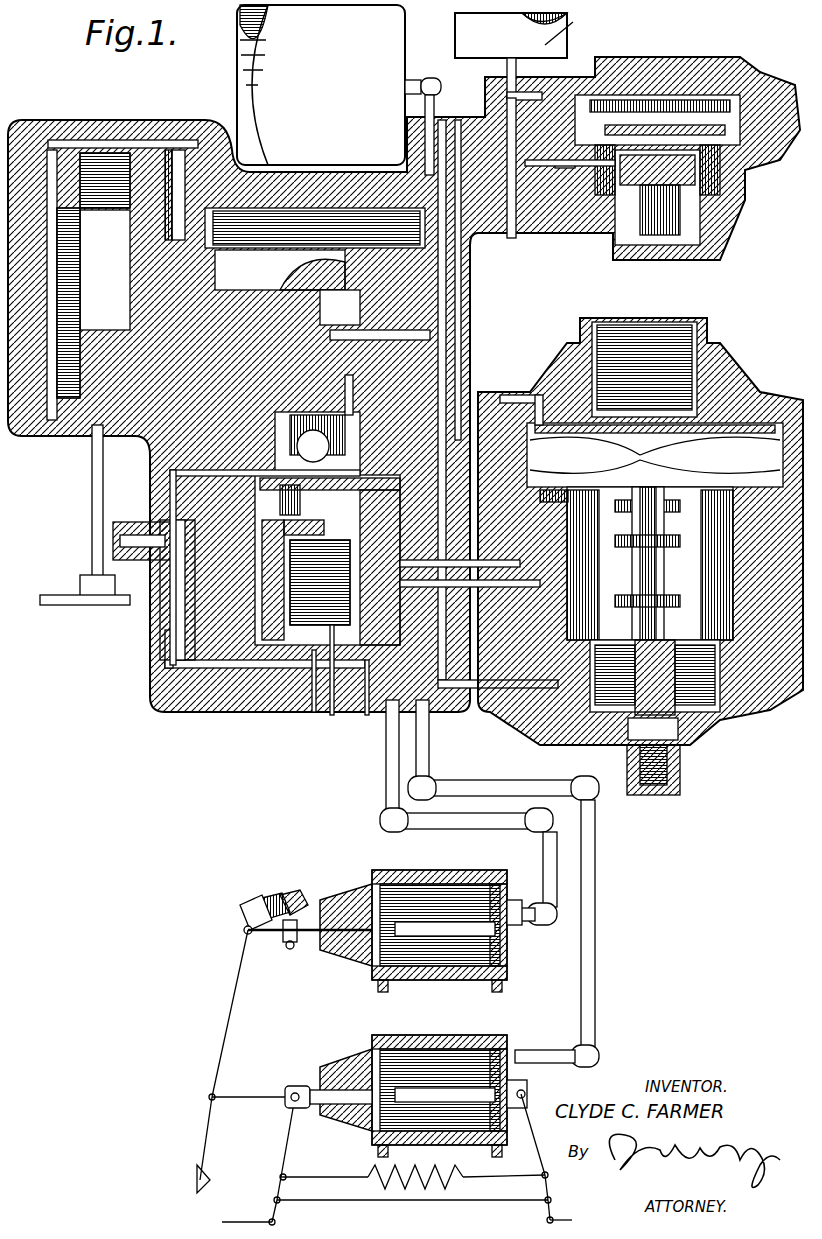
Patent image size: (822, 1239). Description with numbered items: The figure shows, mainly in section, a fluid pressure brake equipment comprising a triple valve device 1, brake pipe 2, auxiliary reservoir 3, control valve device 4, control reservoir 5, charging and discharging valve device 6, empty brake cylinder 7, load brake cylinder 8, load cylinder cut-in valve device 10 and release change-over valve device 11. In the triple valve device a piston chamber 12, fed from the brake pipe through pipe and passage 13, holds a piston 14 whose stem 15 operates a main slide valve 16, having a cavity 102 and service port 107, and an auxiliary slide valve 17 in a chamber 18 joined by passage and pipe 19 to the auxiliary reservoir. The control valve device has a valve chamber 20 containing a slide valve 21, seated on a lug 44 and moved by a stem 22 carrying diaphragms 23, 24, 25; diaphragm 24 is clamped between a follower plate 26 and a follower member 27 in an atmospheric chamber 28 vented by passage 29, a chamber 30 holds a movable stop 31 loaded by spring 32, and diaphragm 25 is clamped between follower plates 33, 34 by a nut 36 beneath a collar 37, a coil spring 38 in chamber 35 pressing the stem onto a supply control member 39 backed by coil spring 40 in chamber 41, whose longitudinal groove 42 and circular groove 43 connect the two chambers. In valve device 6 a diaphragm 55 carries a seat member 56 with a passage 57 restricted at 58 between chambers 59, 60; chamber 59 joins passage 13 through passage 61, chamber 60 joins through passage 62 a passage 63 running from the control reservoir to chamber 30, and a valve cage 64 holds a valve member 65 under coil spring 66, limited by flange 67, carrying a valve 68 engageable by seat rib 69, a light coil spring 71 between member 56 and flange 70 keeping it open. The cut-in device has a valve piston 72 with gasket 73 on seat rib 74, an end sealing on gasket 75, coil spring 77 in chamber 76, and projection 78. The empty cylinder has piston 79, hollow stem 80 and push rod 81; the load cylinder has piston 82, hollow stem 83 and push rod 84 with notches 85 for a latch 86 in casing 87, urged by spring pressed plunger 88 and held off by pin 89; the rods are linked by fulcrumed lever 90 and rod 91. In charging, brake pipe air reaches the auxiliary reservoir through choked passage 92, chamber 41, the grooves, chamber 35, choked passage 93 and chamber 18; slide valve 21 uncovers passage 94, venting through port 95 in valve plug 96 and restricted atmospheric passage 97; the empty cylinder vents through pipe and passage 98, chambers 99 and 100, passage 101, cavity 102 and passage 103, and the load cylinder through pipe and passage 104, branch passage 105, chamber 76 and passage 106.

The triple valve device 1 is at (205, 120).
The brake pipe 2 is at (52, 596).
The auxiliary reservoir 3 is at (329, 85).
The control valve device 4 is at (560, 395).
The control reservoir 5 is at (619, 51).
The control reservoir charging and discharging valve device 6 is at (672, 57).
The empty brake cylinder 7 is at (355, 1065).
The load brake cylinder 8 is at (358, 897).
The load cylinder cut-in valve device 10 is at (250, 630).
The release change-over valve device 11 is at (140, 522).
The piston chamber 12 is at (104, 190).
The pipe and passage 13 is at (45, 287).
The piston 14 is at (132, 228).
The stem 15 is at (268, 263).
The main slide valve 16 is at (228, 305).
The auxiliary slide valve 17 is at (330, 285).
The chamber 18 is at (315, 228).
The passage and pipe 19 is at (432, 150).
The valve chamber 20 is at (730, 545).
The slide valve 21 is at (660, 552).
The stem 22 is at (655, 512).
The flexible diaphragm 23 is at (730, 410).
The flexible diaphragm 24 is at (750, 430).
The flexible diaphragm 25 is at (745, 595).
The follower plate 26 is at (722, 521).
The follower member 27 is at (720, 400).
The chamber 28 is at (760, 395).
The passage 29 is at (770, 445).
The chamber 30 is at (560, 415).
The movable stop 31 is at (710, 345).
The spring 32 is at (640, 340).
The follower plate 33 is at (669, 597).
The follower plate 34 is at (725, 670).
The chamber 35 is at (722, 700).
The nut 36 is at (725, 717).
The collar 37 is at (670, 598).
The coil spring 38 is at (715, 735).
The fluid pressure supply control member 39 is at (700, 760).
The coil spring 40 is at (680, 790).
The chamber 41 is at (648, 795).
The longitudinal groove 42 is at (700, 748).
The circular groove 43 is at (692, 745).
The lug 44 is at (570, 535).
The flexible diaphragm 55 is at (580, 95).
The valve seat member 56 is at (690, 100).
The passage 57 is at (650, 120).
The restriction 58 is at (675, 95).
The chamber 59 is at (590, 196).
The chamber 60 is at (600, 95).
The passage 61 is at (128, 140).
The passage 62 is at (530, 96).
The passage 63 is at (507, 75).
The valve cage 64 is at (618, 235).
The valve member 65 is at (625, 245).
The coil spring 66 is at (672, 235).
The annular flange 67 is at (560, 148).
The valve 68 is at (710, 165).
The annular seat rib 69 is at (715, 118).
The annular flange 70 is at (735, 212).
The light coil spring 71 is at (715, 190).
The valve piston 72 is at (262, 590).
The gasket 73 is at (350, 515).
The annular seat rib 74 is at (350, 470).
The gasket 75 is at (367, 690).
The chamber 76 is at (300, 640).
The coil spring 77 is at (332, 660).
The projection 78 is at (335, 485).
The piston 79 is at (478, 1050).
The hollow stem 80 is at (400, 1090).
The push rod 81 is at (300, 1086).
The piston 82 is at (485, 900).
The hollow stem 83 is at (440, 915).
The push rod 84 is at (412, 915).
The notches 85 is at (385, 915).
The latch 86 is at (295, 895).
The latch casing 87 is at (270, 895).
The spring pressed plunger 88 is at (240, 905).
The pin 89 is at (296, 950).
The fulcrumed lever 90 is at (228, 1015).
The rod 91 is at (245, 1097).
The choked passage 92 is at (145, 438).
The choked passage 93 is at (446, 330).
The passage 94 is at (168, 640).
The port 95 is at (185, 558).
The valve plug 96 is at (160, 525).
The restricted atmospheric passage 97 is at (113, 542).
The pipe and passage 98 is at (616, 926).
The chamber 99 is at (280, 495).
The chamber 100 is at (320, 440).
The passage 101 is at (345, 394).
The cavity 102 is at (345, 320).
The passage 103 is at (335, 337).
The pipe and passage 104 is at (615, 860).
The branch passage 105 is at (380, 745).
The passage 106 is at (314, 700).
The service port 107 is at (430, 318).